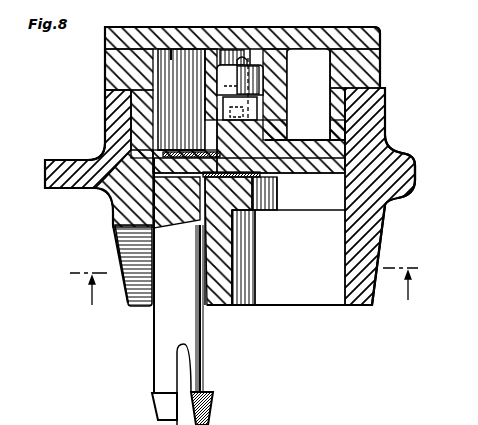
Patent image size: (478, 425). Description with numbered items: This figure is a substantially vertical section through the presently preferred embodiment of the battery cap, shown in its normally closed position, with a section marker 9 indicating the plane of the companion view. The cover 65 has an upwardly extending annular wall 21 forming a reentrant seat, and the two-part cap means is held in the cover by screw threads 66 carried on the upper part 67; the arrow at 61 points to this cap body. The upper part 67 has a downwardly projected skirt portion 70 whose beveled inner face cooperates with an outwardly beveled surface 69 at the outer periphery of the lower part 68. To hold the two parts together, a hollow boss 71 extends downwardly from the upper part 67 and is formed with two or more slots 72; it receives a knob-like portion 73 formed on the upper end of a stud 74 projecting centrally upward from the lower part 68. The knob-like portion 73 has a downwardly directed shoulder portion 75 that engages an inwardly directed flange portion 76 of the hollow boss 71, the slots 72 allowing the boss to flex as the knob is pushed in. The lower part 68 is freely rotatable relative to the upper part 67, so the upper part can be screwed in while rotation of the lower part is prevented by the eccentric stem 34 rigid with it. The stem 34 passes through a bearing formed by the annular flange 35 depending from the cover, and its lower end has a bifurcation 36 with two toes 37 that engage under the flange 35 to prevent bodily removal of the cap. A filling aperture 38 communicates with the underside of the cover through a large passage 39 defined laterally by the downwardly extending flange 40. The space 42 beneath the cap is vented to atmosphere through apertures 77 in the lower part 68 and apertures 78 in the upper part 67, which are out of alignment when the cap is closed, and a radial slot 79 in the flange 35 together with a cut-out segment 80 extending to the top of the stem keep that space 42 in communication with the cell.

The body member 61 is at (96, 60).
The upper part 67 is at (374, 33).
The screw threads 66 is at (128, 107).
The cover 65 is at (90, 150).
The annular wall 21 is at (383, 98).
The space 42 is at (386, 198).
The hollow boss 71 is at (286, 75).
The skirt portion 70 is at (338, 96).
The outwardly beveled surface 69 is at (332, 112).
The slots 72 is at (222, 89).
The apertures 78 is at (172, 49).
The stud 74 is at (217, 136).
The inwardly directed flange portion 76 is at (262, 117).
The shoulder portion 75 is at (250, 96).
The knob-like portion 73 is at (258, 52).
The annular flange 35 is at (222, 306).
The lower part 68 is at (296, 212).
The apertures 77 is at (315, 177).
The aperture 38 is at (300, 212).
The passage 39 is at (320, 298).
The flange 40 is at (360, 306).
The cut-out segment 80 is at (147, 283).
The radial slot 79 is at (113, 229).
The stem 34 is at (158, 333).
The bifurcation 36 is at (180, 368).
The toes 37 is at (155, 400).
The section line 9 is at (244, 276).